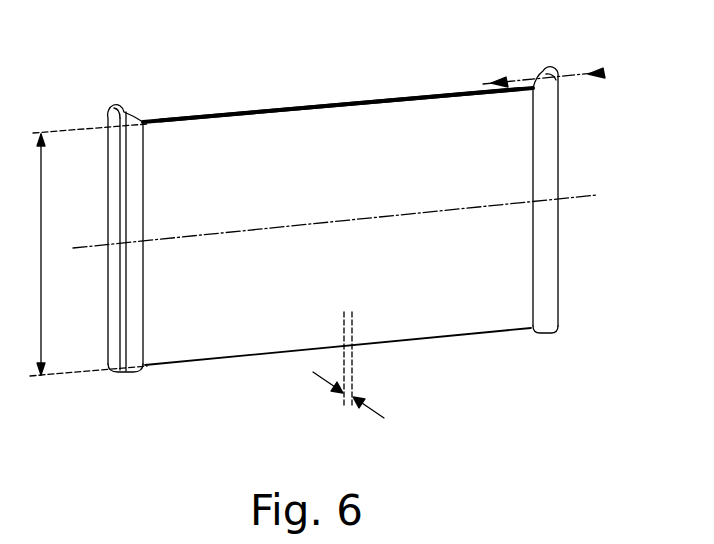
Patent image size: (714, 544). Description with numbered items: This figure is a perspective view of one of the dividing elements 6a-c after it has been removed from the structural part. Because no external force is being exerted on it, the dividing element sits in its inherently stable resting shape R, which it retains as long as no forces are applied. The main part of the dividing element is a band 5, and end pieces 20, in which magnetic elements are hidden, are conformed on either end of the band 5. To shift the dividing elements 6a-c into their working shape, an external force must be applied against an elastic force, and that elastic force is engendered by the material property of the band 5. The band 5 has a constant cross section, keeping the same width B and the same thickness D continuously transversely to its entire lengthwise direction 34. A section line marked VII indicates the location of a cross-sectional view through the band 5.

The band 5 is at (336, 193).
The dividing elements 6a-c is at (362, 130).
The end pieces 20 is at (121, 186).
The lengthwise direction 34 is at (580, 195).
The resting shape R is at (256, 96).
The width B is at (84, 250).
The thickness D is at (348, 377).
The section line VII- VII is at (533, 93).